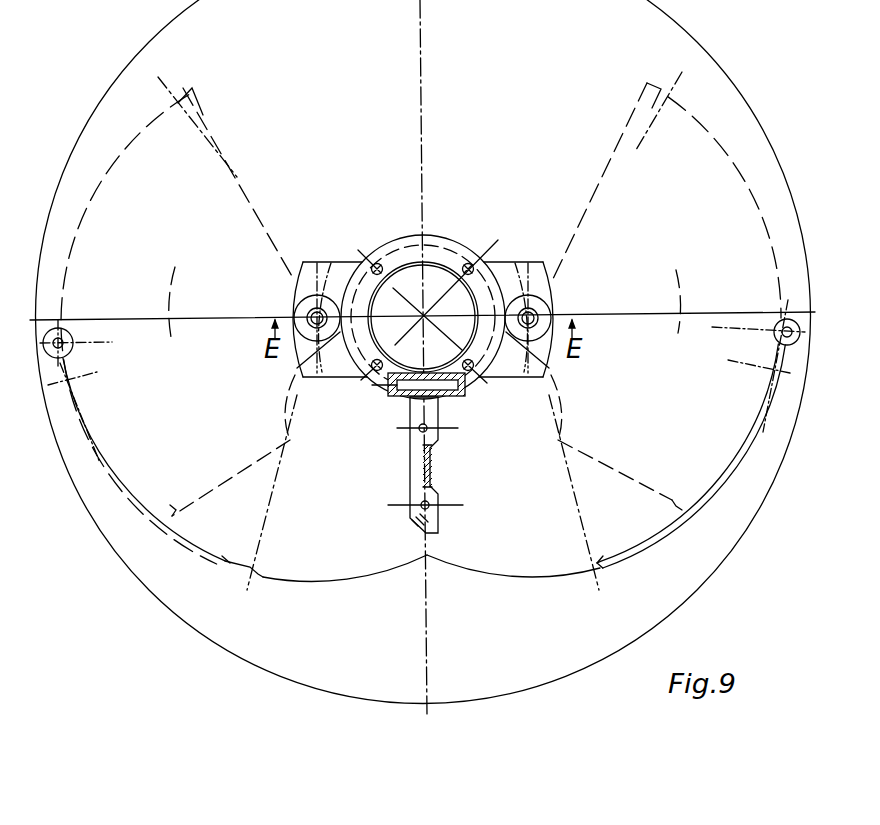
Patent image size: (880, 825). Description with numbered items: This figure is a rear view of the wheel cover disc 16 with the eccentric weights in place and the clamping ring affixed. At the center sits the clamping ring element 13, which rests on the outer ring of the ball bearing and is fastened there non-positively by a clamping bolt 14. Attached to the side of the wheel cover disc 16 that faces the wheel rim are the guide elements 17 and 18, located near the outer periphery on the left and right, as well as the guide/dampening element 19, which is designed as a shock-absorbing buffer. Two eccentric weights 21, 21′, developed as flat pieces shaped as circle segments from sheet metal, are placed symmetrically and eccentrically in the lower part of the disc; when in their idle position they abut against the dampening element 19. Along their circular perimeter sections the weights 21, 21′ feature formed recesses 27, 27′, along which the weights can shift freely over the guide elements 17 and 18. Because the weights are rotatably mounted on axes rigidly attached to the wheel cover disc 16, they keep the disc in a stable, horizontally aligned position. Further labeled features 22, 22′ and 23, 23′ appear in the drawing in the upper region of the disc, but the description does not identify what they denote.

The clamping ring element 13 is at (397, 236).
The clamping bolt 14 is at (392, 389).
The wheel cover disc 16 is at (524, 644).
The guide element 17 is at (777, 333).
The guide element 18 is at (66, 339).
The guide/dampening element 19 is at (413, 434).
The eccentric weight 21 is at (297, 568).
The eccentric weight 21′ is at (508, 542).
The blade edge marker 22 is at (172, 281).
The blade edge marker 22′ is at (679, 290).
The blade arm 23 is at (170, 152).
The blade arm 23′ is at (590, 243).
The formed recess 27 is at (233, 562).
The formed recess 27′ is at (618, 553).